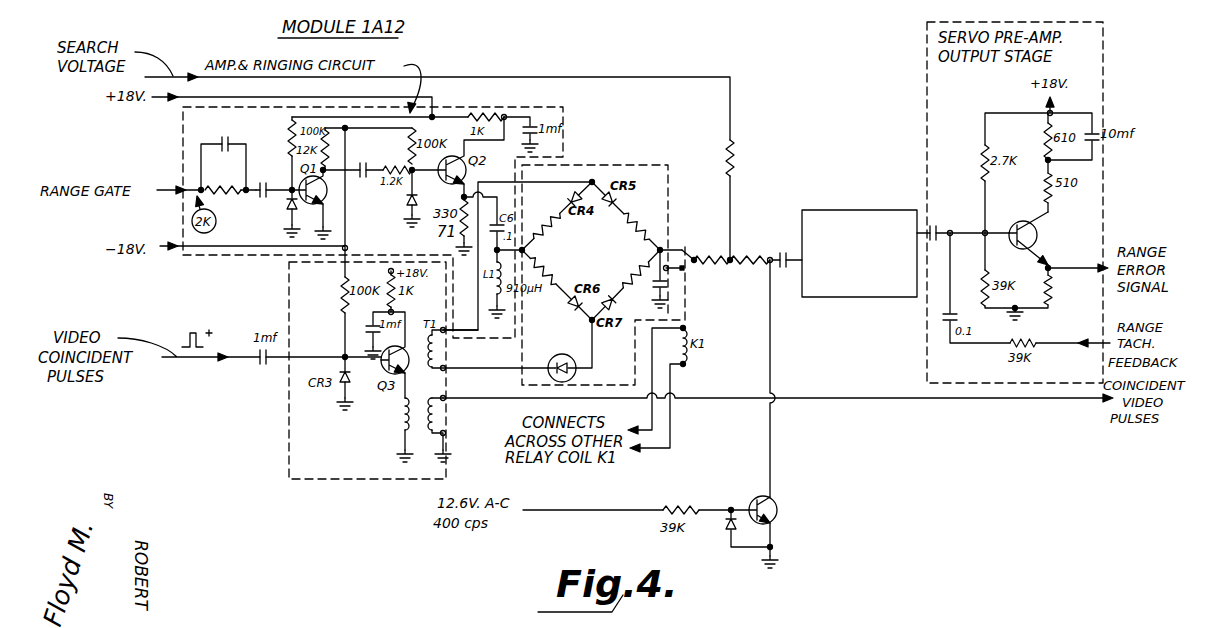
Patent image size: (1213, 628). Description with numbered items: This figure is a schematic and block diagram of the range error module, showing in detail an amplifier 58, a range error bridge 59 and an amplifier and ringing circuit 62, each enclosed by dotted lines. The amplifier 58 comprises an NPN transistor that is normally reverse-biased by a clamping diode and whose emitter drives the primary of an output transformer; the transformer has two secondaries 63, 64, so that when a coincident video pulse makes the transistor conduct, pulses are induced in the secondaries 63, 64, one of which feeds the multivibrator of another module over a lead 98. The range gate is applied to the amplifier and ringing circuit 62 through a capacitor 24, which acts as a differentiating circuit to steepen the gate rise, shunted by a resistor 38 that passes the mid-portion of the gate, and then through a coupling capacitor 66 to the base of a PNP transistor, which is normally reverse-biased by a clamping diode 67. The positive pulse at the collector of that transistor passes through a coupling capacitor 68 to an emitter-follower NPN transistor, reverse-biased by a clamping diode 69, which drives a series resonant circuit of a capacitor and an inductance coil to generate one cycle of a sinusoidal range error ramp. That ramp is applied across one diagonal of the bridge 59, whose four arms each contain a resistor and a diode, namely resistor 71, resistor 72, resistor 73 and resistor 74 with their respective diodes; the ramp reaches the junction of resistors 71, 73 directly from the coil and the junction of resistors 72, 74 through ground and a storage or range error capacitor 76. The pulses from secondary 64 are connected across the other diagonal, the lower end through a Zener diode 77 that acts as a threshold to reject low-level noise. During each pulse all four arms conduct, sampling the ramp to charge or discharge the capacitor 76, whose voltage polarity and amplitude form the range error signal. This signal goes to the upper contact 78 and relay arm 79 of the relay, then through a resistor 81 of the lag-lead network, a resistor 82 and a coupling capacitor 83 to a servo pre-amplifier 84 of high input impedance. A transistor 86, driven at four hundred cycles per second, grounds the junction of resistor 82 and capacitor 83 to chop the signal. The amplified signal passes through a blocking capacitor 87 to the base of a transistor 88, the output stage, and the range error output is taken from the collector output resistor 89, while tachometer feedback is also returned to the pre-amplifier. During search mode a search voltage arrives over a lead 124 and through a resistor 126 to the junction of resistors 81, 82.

The capacitor 24 is at (234, 141).
The resistor 38 is at (222, 195).
The amplifier 58 is at (289, 425).
The range error bridge 59 is at (669, 168).
The amplifier and ringing circuit 62 is at (183, 157).
The secondary 63 is at (447, 410).
The secondary 64 is at (447, 351).
The coupling capacitor 66 is at (265, 199).
The clamping diode 67 is at (286, 212).
The coupling capacitor 68 is at (366, 180).
The clamping diode 69 is at (418, 203).
The resistor 71 is at (553, 227).
The resistor 72 is at (631, 233).
The resistor 73 is at (553, 270).
The resistor 74 is at (627, 270).
The storage or range error capacitor 76 is at (657, 291).
The Zener diode 77 is at (578, 374).
The upper contact 78 is at (683, 247).
The relay arm 79 is at (695, 257).
The resistor 81 is at (716, 259).
The resistor 82 is at (758, 266).
The coupling capacitor 83 is at (784, 254).
The servo pre-amplifier 84 is at (871, 210).
The transistor 86 is at (776, 502).
The blocking capacitor 87 is at (942, 240).
The transistor 88 is at (1037, 237).
The collector output resistor 89 is at (1052, 292).
The lead 98 is at (1072, 399).
The lead 124 is at (608, 78).
The resistor 126 is at (735, 145).